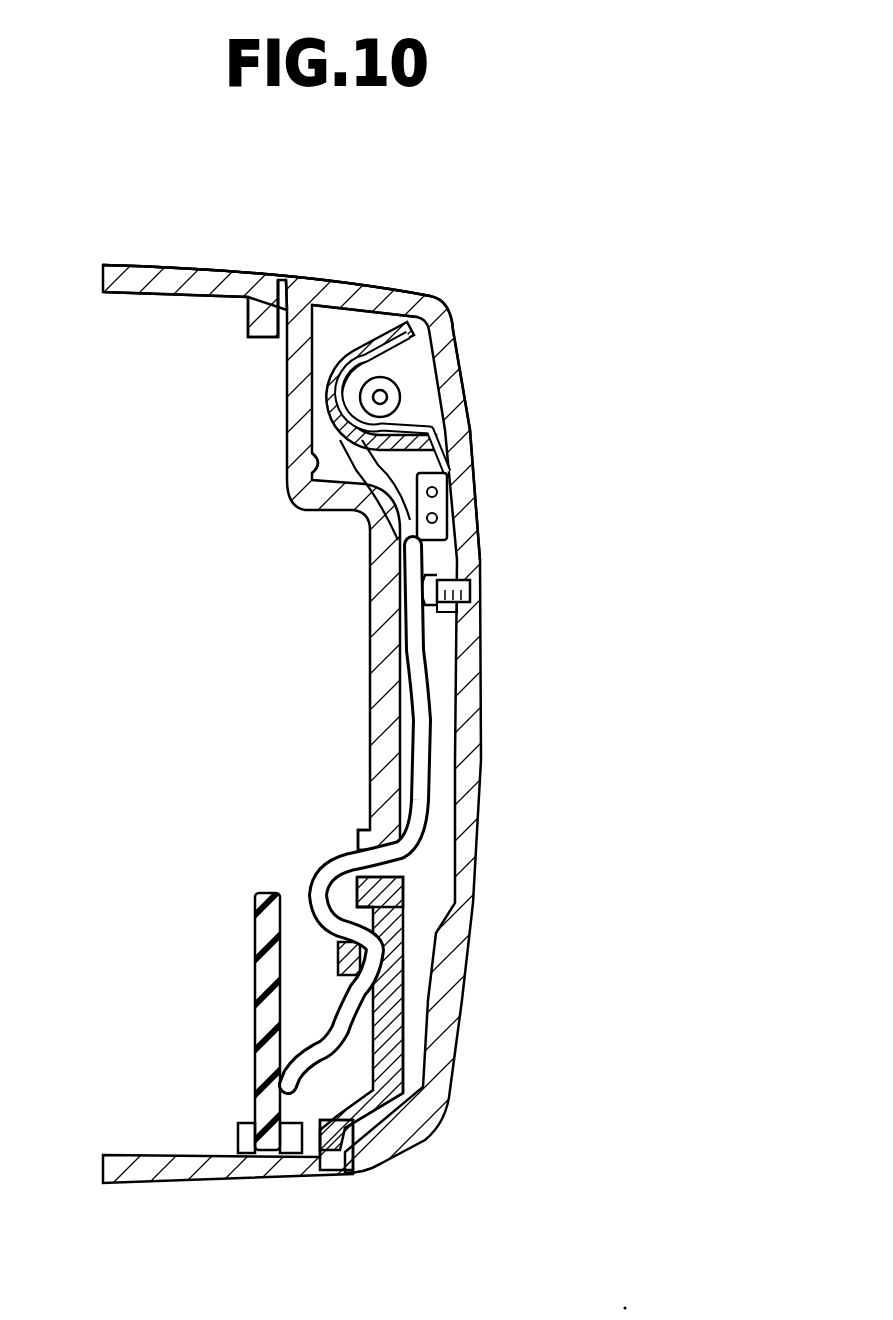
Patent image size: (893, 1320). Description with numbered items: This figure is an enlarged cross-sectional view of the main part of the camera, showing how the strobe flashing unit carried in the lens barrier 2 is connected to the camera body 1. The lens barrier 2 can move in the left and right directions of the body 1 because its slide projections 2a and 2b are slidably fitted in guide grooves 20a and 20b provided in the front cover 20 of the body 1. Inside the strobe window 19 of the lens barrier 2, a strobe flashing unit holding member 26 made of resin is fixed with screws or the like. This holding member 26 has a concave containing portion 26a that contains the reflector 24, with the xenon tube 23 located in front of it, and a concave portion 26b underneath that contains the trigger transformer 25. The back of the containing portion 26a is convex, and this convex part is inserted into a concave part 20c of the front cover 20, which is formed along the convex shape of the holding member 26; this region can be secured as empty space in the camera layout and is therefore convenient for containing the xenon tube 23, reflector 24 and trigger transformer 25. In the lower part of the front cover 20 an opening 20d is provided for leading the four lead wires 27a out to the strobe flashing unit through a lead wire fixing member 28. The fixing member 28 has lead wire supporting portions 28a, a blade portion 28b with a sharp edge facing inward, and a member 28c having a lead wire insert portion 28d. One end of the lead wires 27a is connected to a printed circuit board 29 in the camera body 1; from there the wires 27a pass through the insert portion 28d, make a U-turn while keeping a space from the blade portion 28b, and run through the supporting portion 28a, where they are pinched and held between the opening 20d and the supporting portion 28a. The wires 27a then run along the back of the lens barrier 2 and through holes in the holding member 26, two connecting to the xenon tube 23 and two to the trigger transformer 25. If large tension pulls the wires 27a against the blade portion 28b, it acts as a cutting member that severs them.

The camera body 1 is at (266, 280).
The front cover 20 is at (190, 266).
The lens barrier 2 is at (466, 1047).
The slide projection 2a is at (280, 300).
The slide projection 2b is at (340, 1145).
The strobe window 19 is at (455, 345).
The guide groove 20a is at (272, 340).
The guide groove 20b is at (390, 1138).
The concave part 20c is at (288, 480).
The opening 20d is at (365, 832).
The xenon tube 23 is at (400, 397).
The reflector 24 is at (413, 425).
The trigger transformer 25 is at (450, 510).
The strobe flashing unit holding member 26 is at (455, 556).
The containing portion 26a is at (345, 405).
The concave portion 26b is at (405, 537).
The lead wires 27a is at (432, 705).
The lead wire fixing member 28 is at (440, 897).
The lead wire supporting portions 28a is at (430, 870).
The blade portion 28b is at (320, 880).
The member 28c is at (330, 958).
The lead wire insert portion 28d is at (462, 967).
The printed circuit board 29 is at (255, 1032).